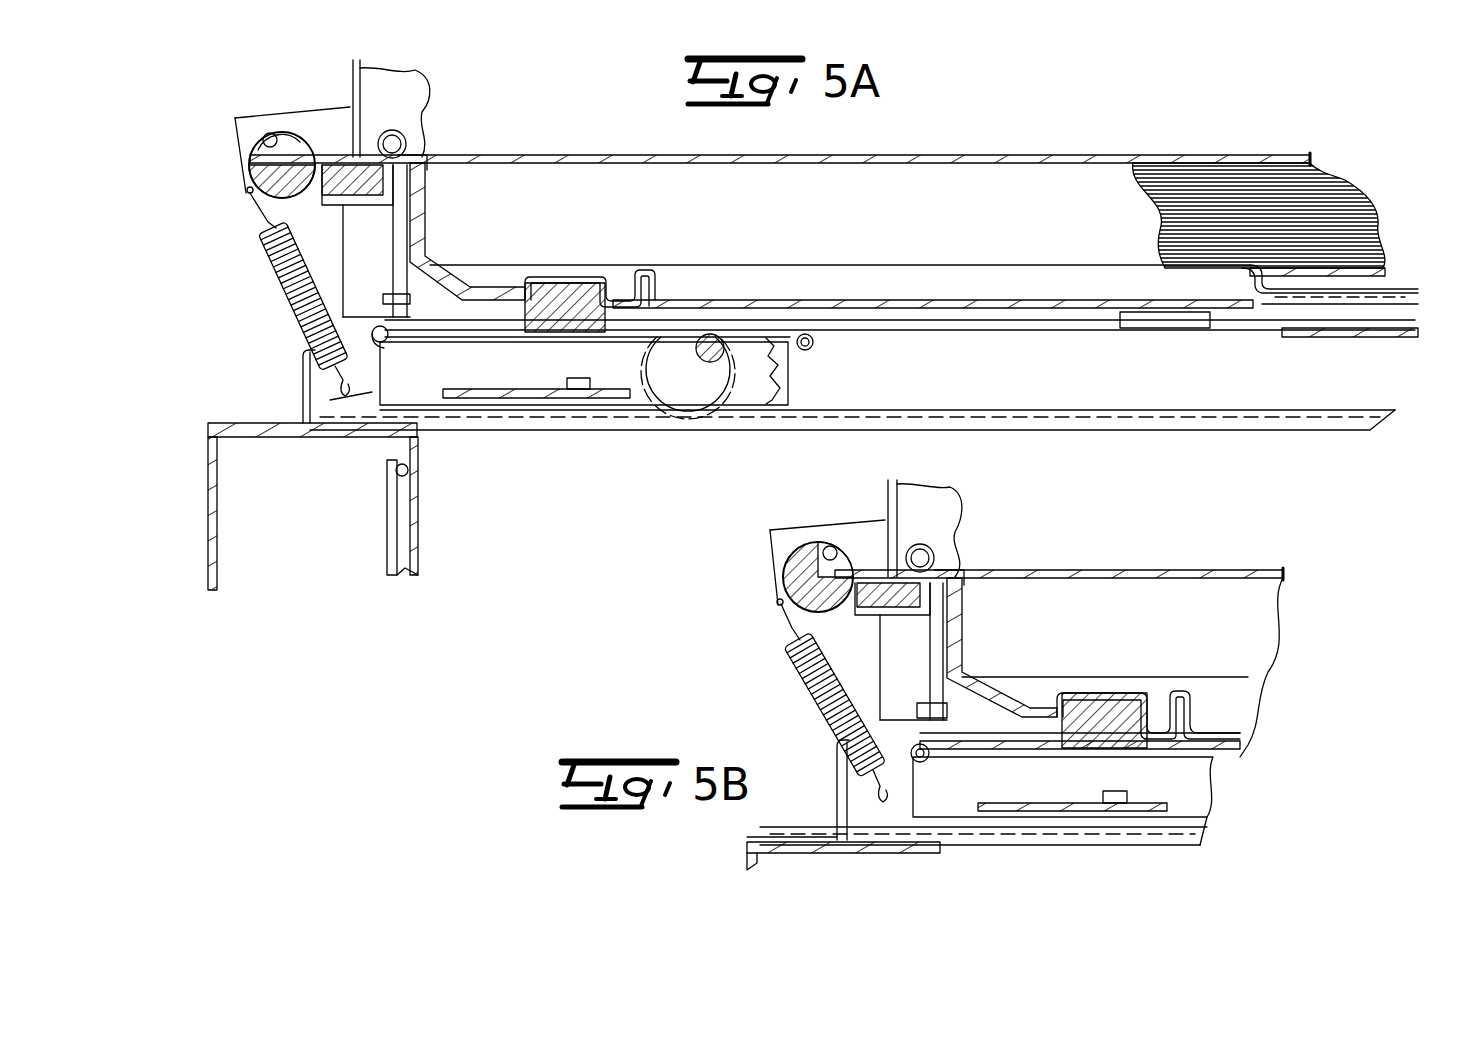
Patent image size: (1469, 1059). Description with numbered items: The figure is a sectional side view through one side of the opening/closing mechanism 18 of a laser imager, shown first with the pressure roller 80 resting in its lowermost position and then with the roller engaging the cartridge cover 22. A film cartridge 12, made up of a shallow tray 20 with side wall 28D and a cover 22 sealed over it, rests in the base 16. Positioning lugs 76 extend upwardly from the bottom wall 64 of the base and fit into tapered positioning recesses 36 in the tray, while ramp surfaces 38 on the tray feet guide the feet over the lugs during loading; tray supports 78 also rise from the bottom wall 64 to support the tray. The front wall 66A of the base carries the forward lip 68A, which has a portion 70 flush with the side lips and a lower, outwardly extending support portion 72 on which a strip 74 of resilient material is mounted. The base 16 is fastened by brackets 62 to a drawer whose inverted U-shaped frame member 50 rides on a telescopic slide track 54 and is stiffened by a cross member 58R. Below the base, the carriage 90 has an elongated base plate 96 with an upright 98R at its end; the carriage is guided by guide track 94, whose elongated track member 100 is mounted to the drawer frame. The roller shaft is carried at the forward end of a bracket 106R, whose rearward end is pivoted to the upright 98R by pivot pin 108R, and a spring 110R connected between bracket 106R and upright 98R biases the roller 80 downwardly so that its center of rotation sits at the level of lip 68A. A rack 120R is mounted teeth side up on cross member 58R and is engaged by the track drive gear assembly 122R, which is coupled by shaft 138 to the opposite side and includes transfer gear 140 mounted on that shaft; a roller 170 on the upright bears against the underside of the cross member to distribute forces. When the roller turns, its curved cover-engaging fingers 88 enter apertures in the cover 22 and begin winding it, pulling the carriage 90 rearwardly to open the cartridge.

In FIG. 5A, the cartridge 12 is at (1213, 148).
In FIG. 5A, the base 16 is at (932, 334).
In FIG. 5B, the base 16 is at (1230, 760).
In FIG. 5A, the opening/closing mechanism 18 is at (240, 126).
In FIG. 5B, the opening/closing mechanism 18 is at (742, 600).
In FIG. 5A, the tray 20 is at (905, 190).
In FIG. 5B, the tray 20 is at (1262, 578).
In FIG. 5A, the cartridge cover 22 is at (1045, 153).
In FIG. 5B, the cartridge cover 22 is at (1185, 570).
In FIG. 5A, the side wall 28D is at (830, 224).
In FIG. 5B, the side wall 28D is at (1128, 640).
In FIG. 5A, the positioning recesses 36 is at (580, 280).
In FIG. 5B, the positioning recesses 36 is at (1122, 692).
In FIG. 5A, the ramp surfaces 38 is at (412, 272).
In FIG. 5A, the frame member 50 is at (206, 550).
In FIG. 5B, the frame member 50 is at (745, 862).
In FIG. 5A, the telescopic slide track 54 is at (386, 525).
In FIG. 5A, the cross member 58R is at (302, 390).
In FIG. 5B, the cross member 58R is at (835, 806).
In FIG. 5A, the brackets 62 is at (375, 390).
In FIG. 5A, the bottom wall 64 is at (572, 336).
In FIG. 5B, the bottom wall 64 is at (1182, 740).
In FIG. 5A, the front wall 66A is at (428, 212).
In FIG. 5B, the front wall 66A is at (965, 612).
In FIG. 5B, the forward lip 68A is at (935, 662).
In FIG. 5A, the portion 70 is at (420, 158).
In FIG. 5B, the portion 70 is at (960, 574).
In FIG. 5A, the support portion 72 is at (335, 205).
In FIG. 5B, the support portion 72 is at (868, 615).
In FIG. 5A, the strip of resilient material 74 is at (375, 205).
In FIG. 5B, the strip of resilient material 74 is at (910, 615).
In FIG. 5A, the positioning lugs 76 is at (548, 322).
In FIG. 5B, the positioning lugs 76 is at (1090, 735).
In FIG. 5A, the tray supports 78 is at (1188, 322).
In FIG. 5A, the pressure roller 80 is at (300, 148).
In FIG. 5B, the pressure roller 80 is at (786, 568).
In FIG. 5A, the cover-engaging fingers 88 is at (272, 135).
In FIG. 5B, the cover-engaging fingers 88 is at (832, 548).
In FIG. 5A, the carriage 90 is at (792, 384).
In FIG. 5B, the carriage 90 is at (1210, 800).
In FIG. 5A, the guide track 94 is at (500, 432).
In FIG. 5B, the guide track 94 is at (1205, 840).
In FIG. 5A, the base plate 96 is at (397, 400).
In FIG. 5A, the upright 98R is at (500, 378).
In FIG. 5B, the upright 98R is at (1043, 791).
In FIG. 5A, the track member 100 is at (455, 420).
In FIG. 5B, the track member 100 is at (1025, 836).
In FIG. 5A, the bracket 106R is at (238, 120).
In FIG. 5B, the bracket 106R is at (803, 538).
In FIG. 5A, the pivot pin 108R is at (398, 135).
In FIG. 5B, the pivot pin 108R is at (925, 548).
In FIG. 5A, the spring 110R is at (262, 262).
In FIG. 5B, the spring 110R is at (800, 686).
In FIG. 5A, the rack 120R is at (1385, 300).
In FIG. 5A, the track drive gear assembly 122R is at (690, 405).
In FIG. 5A, the shaft 138 is at (722, 346).
In FIG. 5A, the transfer gear 140 is at (715, 405).
In FIG. 5A, the rollers 170 is at (815, 344).
In FIG. 5B, the rollers 170 is at (928, 760).